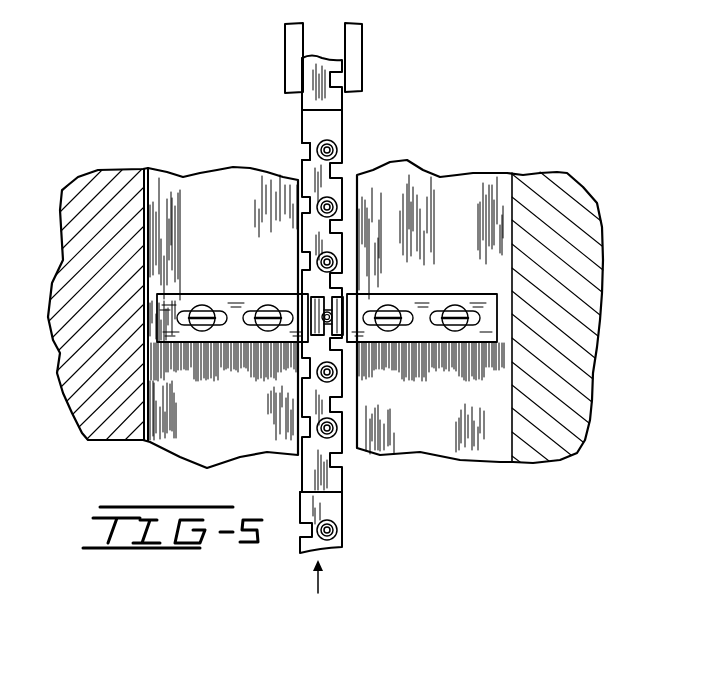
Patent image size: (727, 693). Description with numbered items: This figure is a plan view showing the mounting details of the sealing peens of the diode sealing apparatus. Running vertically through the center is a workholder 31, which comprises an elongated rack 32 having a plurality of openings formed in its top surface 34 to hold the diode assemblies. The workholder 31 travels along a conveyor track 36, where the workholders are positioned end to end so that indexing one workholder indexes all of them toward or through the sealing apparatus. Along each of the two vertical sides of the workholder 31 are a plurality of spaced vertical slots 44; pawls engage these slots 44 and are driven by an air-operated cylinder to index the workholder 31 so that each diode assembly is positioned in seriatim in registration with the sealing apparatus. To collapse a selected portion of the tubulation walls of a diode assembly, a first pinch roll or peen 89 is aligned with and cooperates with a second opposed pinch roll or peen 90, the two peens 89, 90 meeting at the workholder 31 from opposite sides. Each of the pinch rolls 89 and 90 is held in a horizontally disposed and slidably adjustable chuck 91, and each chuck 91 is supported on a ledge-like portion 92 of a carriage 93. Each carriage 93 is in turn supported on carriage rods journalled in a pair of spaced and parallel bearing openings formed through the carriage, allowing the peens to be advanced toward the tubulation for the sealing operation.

The workholder 31 is at (298, 511).
The elongated rack 32 is at (340, 494).
The top surface 34 is at (332, 487).
The conveyor track 36 is at (362, 66).
The vertical slot 44 is at (306, 152).
The first pinch roll or peen 89 is at (312, 304).
The second opposed pinch roll or peen 90 is at (346, 306).
The chuck 91 is at (207, 294).
The ledge-like portion 92 is at (172, 182).
The carriage 93 is at (578, 170).